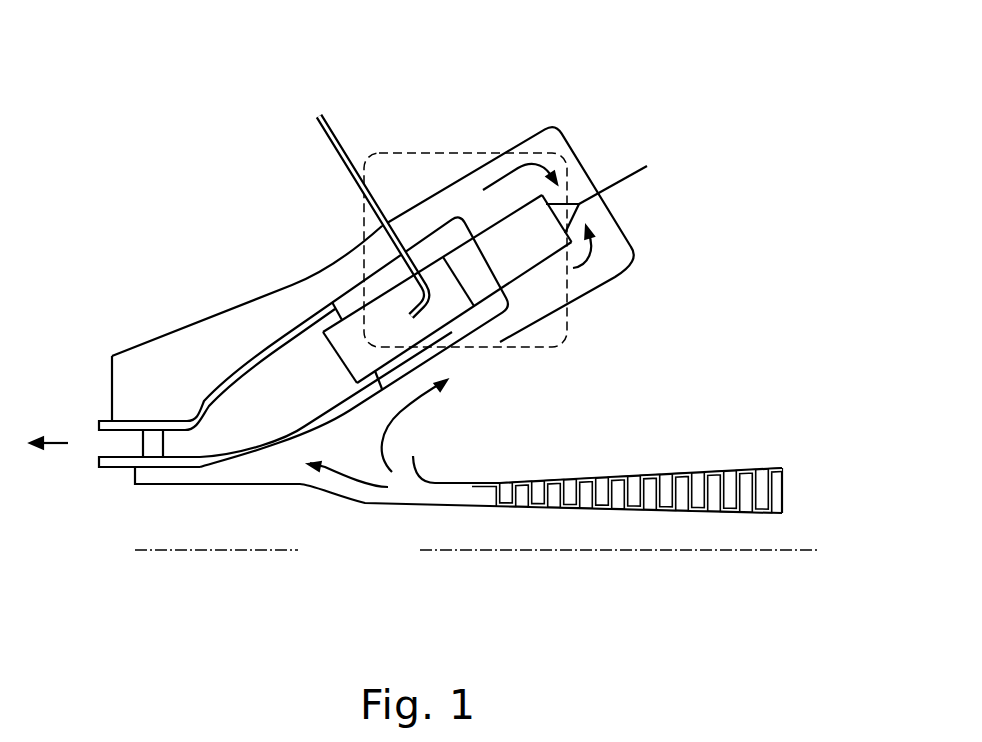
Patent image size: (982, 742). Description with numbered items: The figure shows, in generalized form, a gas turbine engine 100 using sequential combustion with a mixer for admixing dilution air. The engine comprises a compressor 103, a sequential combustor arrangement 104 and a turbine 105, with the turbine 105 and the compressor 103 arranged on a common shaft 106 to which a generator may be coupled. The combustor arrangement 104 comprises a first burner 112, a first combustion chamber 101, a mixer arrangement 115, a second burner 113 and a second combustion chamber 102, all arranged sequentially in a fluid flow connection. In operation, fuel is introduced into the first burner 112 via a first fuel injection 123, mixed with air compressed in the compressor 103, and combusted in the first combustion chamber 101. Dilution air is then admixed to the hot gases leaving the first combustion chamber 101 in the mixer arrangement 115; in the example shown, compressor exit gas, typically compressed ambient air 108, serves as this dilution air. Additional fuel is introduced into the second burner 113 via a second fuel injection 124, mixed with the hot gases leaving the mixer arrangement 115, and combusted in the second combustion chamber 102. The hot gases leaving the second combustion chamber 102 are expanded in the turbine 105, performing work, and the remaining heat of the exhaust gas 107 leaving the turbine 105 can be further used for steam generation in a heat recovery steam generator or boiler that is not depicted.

The gas turbine engine 100 is at (280, 120).
The first combustion chamber 101 is at (509, 246).
The second combustion chamber 102 is at (283, 381).
The compressor 103 is at (708, 513).
The sequential combustor arrangement 104 is at (640, 213).
The turbine 105 is at (153, 502).
The shaft 106 is at (378, 564).
The exhaust gas 107 is at (42, 445).
The compressed ambient air 108 is at (451, 503).
The first burner 112 is at (596, 229).
The second burner 113 is at (405, 328).
The mixer arrangement 115 is at (480, 271).
The first fuel injection 123 is at (647, 167).
The second fuel injection 124 is at (328, 126).